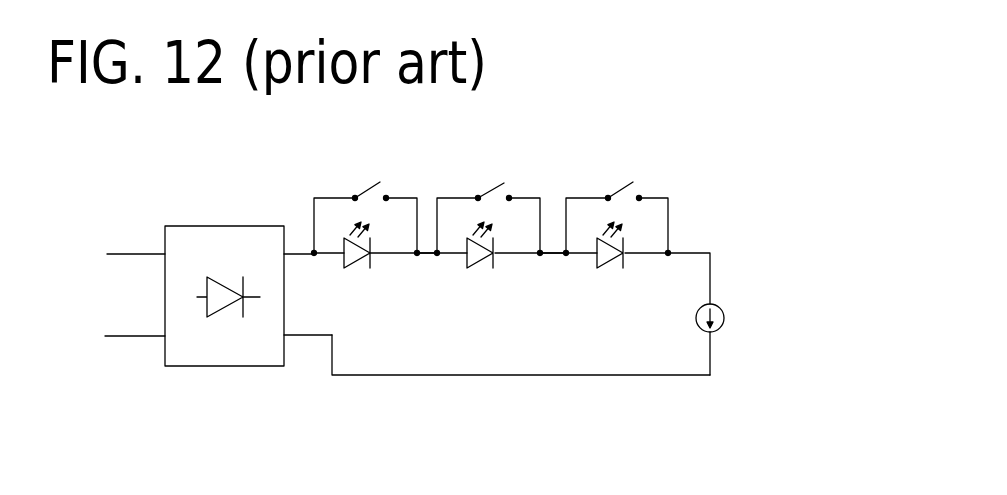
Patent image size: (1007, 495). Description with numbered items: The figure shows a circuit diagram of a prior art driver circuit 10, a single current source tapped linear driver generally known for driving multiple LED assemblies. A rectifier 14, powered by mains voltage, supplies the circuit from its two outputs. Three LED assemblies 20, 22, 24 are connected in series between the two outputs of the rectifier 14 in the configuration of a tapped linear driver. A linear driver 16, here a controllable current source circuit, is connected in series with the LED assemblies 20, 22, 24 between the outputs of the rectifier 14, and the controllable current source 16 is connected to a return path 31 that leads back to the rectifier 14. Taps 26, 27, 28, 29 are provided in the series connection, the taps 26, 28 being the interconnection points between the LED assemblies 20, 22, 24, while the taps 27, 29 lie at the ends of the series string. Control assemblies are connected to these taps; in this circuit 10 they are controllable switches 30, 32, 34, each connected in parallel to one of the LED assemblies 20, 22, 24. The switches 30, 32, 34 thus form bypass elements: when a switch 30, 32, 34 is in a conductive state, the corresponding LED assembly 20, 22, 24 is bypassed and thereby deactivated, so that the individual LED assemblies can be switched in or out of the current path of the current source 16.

The driver circuit 10 is at (583, 161).
The rectifier 14 is at (215, 226).
The linear driver 16 is at (725, 316).
The LED assembly 20 is at (363, 264).
The LED assembly 22 is at (487, 264).
The LED assembly 24 is at (617, 264).
The tap 26 is at (433, 259).
The tap 27 is at (313, 250).
The tap 28 is at (565, 259).
The tap 29 is at (670, 251).
The controllable switch 30 is at (367, 184).
The return path 31 is at (618, 377).
The controllable switch 32 is at (496, 185).
The controllable switch 34 is at (626, 185).